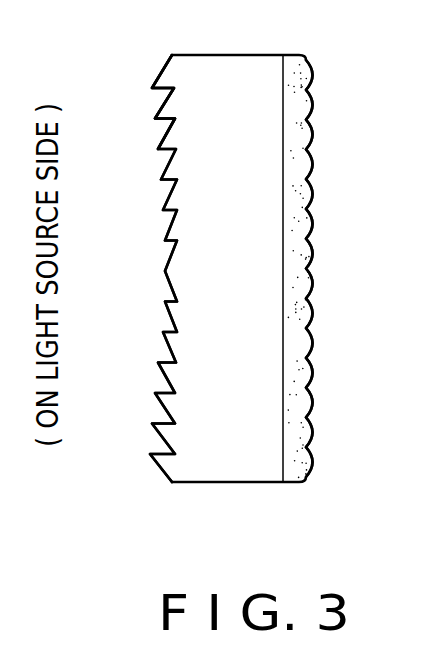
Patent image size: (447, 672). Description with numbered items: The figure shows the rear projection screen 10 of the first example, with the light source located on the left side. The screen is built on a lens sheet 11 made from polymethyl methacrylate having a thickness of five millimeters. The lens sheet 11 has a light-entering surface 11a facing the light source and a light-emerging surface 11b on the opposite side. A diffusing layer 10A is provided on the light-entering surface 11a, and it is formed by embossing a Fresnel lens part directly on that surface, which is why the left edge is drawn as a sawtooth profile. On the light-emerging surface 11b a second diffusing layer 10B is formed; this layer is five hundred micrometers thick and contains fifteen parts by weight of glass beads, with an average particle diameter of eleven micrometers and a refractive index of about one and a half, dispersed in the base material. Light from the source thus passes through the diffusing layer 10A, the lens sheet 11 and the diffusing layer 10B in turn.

The rear projection screen 10 is at (272, 498).
The diffusing layer 10A is at (160, 72).
The diffusing layer 10B is at (314, 67).
The lens sheet 11 is at (219, 475).
The light-entering surface 11a is at (162, 106).
The light-emerging surface 11b is at (313, 193).